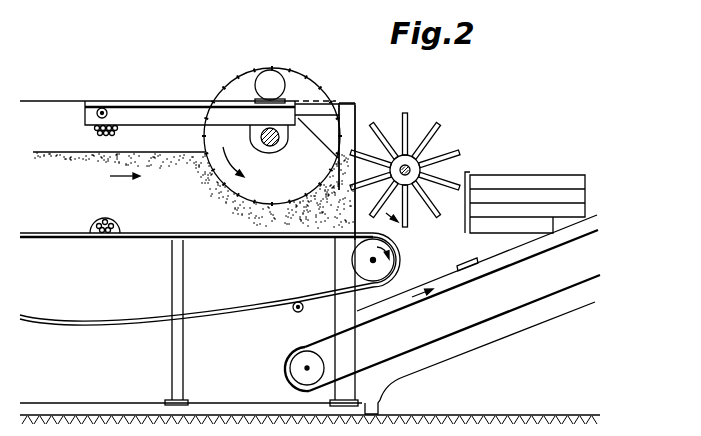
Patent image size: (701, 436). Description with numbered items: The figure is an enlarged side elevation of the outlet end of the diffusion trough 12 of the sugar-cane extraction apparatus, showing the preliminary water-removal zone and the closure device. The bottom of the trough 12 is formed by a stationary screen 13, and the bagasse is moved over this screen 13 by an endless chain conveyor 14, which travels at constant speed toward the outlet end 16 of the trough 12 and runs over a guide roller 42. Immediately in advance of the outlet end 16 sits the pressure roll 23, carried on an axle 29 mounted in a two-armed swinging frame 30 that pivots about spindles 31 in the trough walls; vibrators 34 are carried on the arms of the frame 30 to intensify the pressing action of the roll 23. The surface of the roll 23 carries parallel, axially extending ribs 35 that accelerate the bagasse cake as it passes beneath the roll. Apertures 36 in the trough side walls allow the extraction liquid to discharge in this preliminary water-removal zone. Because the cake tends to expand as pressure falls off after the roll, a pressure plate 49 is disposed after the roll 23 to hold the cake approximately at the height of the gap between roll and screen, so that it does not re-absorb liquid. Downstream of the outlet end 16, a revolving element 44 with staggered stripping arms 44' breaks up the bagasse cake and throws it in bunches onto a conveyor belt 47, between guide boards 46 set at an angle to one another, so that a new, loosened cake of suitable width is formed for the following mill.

The diffusion trough 12 is at (68, 108).
The stationary screen 13 is at (235, 240).
The endless chain conveyor 14 is at (143, 323).
The outlet end 16 is at (359, 116).
The pressure roll 23 is at (307, 88).
The axle 29 is at (282, 144).
The two-armed swinging frame 30 is at (155, 112).
The spindles 31 is at (104, 108).
The vibrators 34 is at (273, 80).
The ribs 35 is at (255, 69).
The apertures 36 is at (102, 239).
The guide roller 42 is at (396, 266).
The revolving element 44 is at (421, 167).
The stripping arms 44' is at (441, 119).
The guide boards 46 is at (534, 178).
The conveyor belt 47 is at (507, 311).
The pressure plate 49 is at (345, 193).